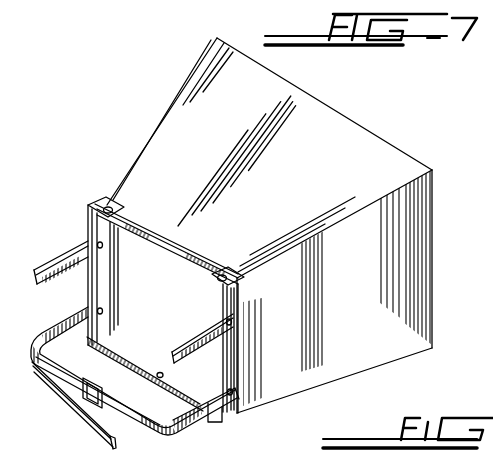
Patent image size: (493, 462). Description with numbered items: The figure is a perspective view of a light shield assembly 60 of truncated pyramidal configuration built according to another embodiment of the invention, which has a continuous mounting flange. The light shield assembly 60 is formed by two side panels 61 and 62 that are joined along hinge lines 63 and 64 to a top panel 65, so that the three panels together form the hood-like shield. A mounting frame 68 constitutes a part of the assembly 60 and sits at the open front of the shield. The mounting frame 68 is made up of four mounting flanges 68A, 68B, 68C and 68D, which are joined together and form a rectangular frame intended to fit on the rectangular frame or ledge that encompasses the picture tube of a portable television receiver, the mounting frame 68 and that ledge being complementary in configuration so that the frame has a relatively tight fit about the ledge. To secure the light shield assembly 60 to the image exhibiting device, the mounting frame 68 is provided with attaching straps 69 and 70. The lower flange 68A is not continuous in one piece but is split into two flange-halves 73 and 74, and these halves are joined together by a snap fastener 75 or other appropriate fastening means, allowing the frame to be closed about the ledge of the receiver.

The light shield assembly 60 is at (300, 225).
The side panel 61 is at (137, 290).
The side panel 62 is at (362, 355).
The hinge line 63 is at (167, 117).
The hinge line 64 is at (328, 226).
The top panel 65 is at (327, 125).
The mounting frame 68 is at (166, 303).
The mounting flange 68A is at (119, 344).
The mounting flange 68B is at (100, 264).
The mounting flange 68C is at (167, 213).
The mounting flange 68D is at (233, 300).
The attaching strap 69 is at (218, 343).
The attaching strap 70 is at (135, 384).
The flange-half 73 is at (120, 351).
The flange-half 74 is at (178, 380).
The snap fastener 75 is at (99, 389).